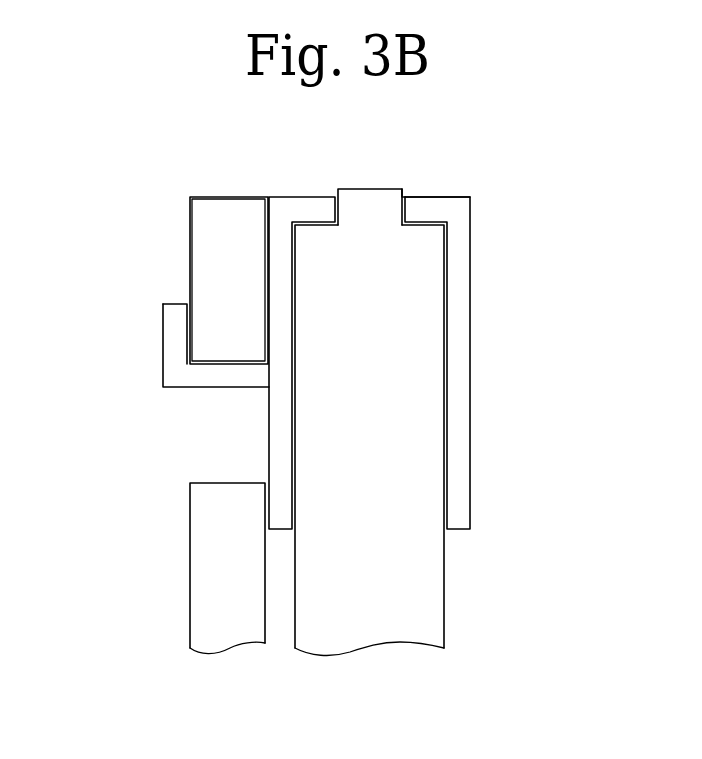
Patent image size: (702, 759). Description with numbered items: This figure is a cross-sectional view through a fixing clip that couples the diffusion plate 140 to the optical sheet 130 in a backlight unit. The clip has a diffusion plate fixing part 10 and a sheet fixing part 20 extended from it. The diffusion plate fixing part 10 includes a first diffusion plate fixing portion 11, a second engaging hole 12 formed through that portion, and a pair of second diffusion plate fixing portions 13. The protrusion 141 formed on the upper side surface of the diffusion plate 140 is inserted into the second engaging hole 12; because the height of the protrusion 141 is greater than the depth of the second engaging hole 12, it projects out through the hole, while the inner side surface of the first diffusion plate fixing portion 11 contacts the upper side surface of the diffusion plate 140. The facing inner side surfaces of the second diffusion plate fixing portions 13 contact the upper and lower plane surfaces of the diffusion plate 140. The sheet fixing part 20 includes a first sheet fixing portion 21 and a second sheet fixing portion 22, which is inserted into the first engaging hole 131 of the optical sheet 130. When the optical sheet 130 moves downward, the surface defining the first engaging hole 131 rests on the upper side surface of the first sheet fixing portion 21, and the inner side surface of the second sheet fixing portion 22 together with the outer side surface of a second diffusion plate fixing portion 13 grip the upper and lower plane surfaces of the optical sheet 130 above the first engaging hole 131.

The diffusion plate fixing part 10 is at (540, 173).
The first diffusion plate fixing portion 11 is at (437, 206).
The second engaging hole 12 is at (406, 190).
The second diffusion plate fixing portions 13 is at (282, 336).
The sheet fixing part 20 is at (93, 323).
The first sheet fixing portion 21 is at (226, 375).
The second sheet fixing portion 22 is at (175, 338).
The optical sheet 130 is at (230, 635).
The first engaging hole 131 is at (190, 452).
The diffusion plate 140 is at (372, 635).
The protrusion 141 is at (370, 188).